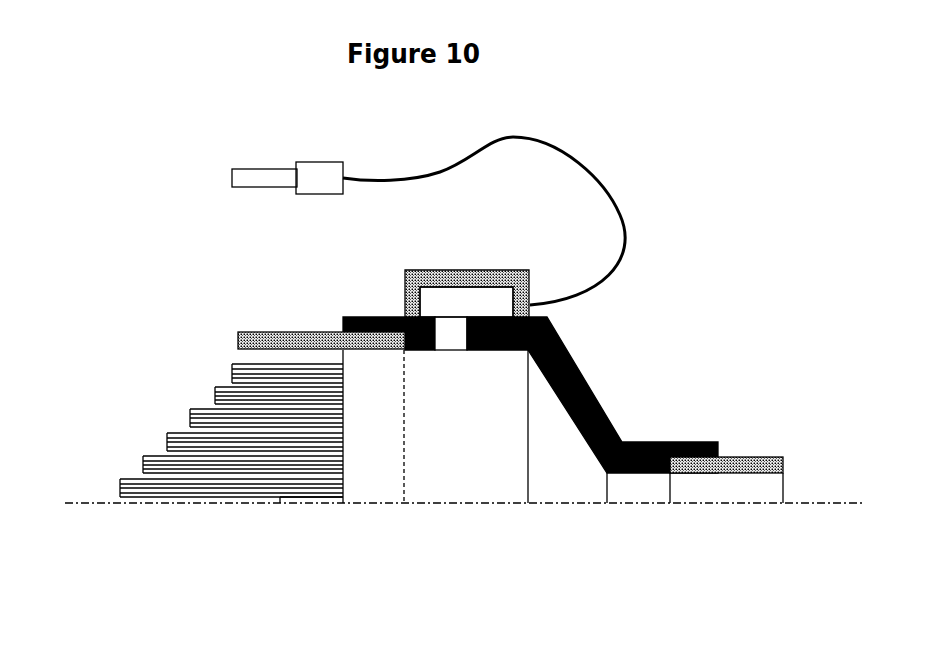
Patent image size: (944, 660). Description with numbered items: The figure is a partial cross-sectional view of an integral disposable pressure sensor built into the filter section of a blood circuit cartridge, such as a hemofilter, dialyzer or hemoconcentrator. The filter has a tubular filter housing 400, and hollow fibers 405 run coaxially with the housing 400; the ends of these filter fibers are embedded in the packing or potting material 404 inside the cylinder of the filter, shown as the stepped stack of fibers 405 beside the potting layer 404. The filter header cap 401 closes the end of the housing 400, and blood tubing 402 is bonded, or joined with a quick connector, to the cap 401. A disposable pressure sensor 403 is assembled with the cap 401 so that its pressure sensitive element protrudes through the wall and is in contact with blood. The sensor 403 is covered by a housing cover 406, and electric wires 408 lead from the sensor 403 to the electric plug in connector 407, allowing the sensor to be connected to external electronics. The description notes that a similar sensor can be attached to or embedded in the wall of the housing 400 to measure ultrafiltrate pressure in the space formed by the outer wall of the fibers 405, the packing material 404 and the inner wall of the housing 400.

The filter housing 400 is at (237, 342).
The filter header cap 401 is at (558, 458).
The blood tubing 402 is at (748, 457).
The disposable pressure sensor 403 is at (482, 302).
The potting material 404 is at (315, 332).
The hollow fibers 405 is at (188, 408).
The housing cover 406 is at (408, 282).
The electric plug in connector 407 is at (317, 162).
The electric wires 408 is at (518, 137).